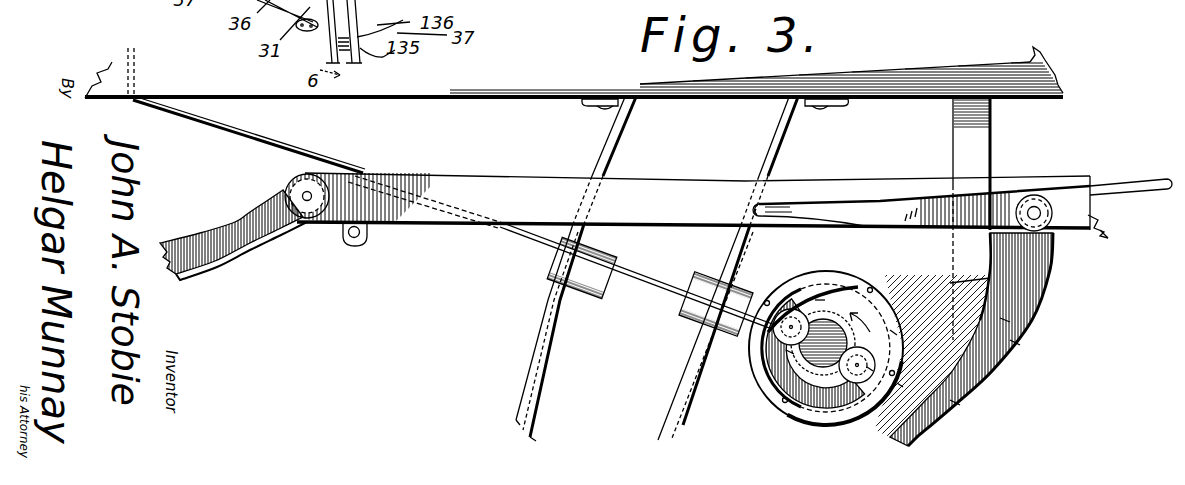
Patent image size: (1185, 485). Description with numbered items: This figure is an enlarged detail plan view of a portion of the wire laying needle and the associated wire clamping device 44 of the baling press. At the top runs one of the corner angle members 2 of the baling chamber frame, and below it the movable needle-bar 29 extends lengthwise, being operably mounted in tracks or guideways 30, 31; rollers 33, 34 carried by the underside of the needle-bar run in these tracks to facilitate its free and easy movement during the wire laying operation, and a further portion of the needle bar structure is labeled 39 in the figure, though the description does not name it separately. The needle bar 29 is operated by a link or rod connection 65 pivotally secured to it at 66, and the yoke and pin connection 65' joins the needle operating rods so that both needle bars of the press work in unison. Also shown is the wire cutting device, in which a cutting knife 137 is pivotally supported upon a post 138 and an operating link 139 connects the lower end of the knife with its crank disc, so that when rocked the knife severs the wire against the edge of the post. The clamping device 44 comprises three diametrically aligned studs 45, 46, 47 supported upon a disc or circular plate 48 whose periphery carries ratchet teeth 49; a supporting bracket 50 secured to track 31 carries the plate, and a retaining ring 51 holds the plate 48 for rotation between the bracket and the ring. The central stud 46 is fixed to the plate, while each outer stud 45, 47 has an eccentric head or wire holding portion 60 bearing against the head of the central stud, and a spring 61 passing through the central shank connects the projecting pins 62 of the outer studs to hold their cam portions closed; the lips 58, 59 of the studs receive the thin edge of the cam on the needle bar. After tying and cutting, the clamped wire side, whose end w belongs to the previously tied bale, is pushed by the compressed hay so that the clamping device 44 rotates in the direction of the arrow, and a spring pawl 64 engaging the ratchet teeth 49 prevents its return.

The corner angle member 2 is at (1042, 90).
The wire end of previously tied bale W is at (308, 153).
The link or rod connection 65 is at (1002, 219).
The pivot connection of link to needle bar 66 is at (853, 198).
The roller 34 is at (1062, 182).
The needle-bar 29 is at (1100, 230).
The main bar 39 is at (439, 219).
The roller 33 is at (278, 188).
The track or guideway 30 is at (215, 221).
The yoke and pin connection 65' is at (346, 250).
The cutting knife 137 is at (752, 288).
The post 138 is at (606, 298).
The operating link 139 is at (538, 422).
The head or wire holding portion 60 is at (898, 290).
The track or guideway 31 is at (944, 432).
The supporting bracket 50 is at (880, 282).
The retaining ring 51 is at (880, 325).
The ratchet teeth 49 is at (1010, 337).
The spring pawl 64 is at (960, 400).
The projecting pin 62 is at (805, 290).
The central stud 46 is at (826, 370).
The stud 45 is at (773, 331).
The spring 61 is at (840, 298).
The disc or circular plate 48 is at (822, 300).
The lip 58 is at (786, 350).
The lip 59 is at (890, 330).
The stud 47 is at (875, 370).
The wire clamping device 44 is at (905, 387).